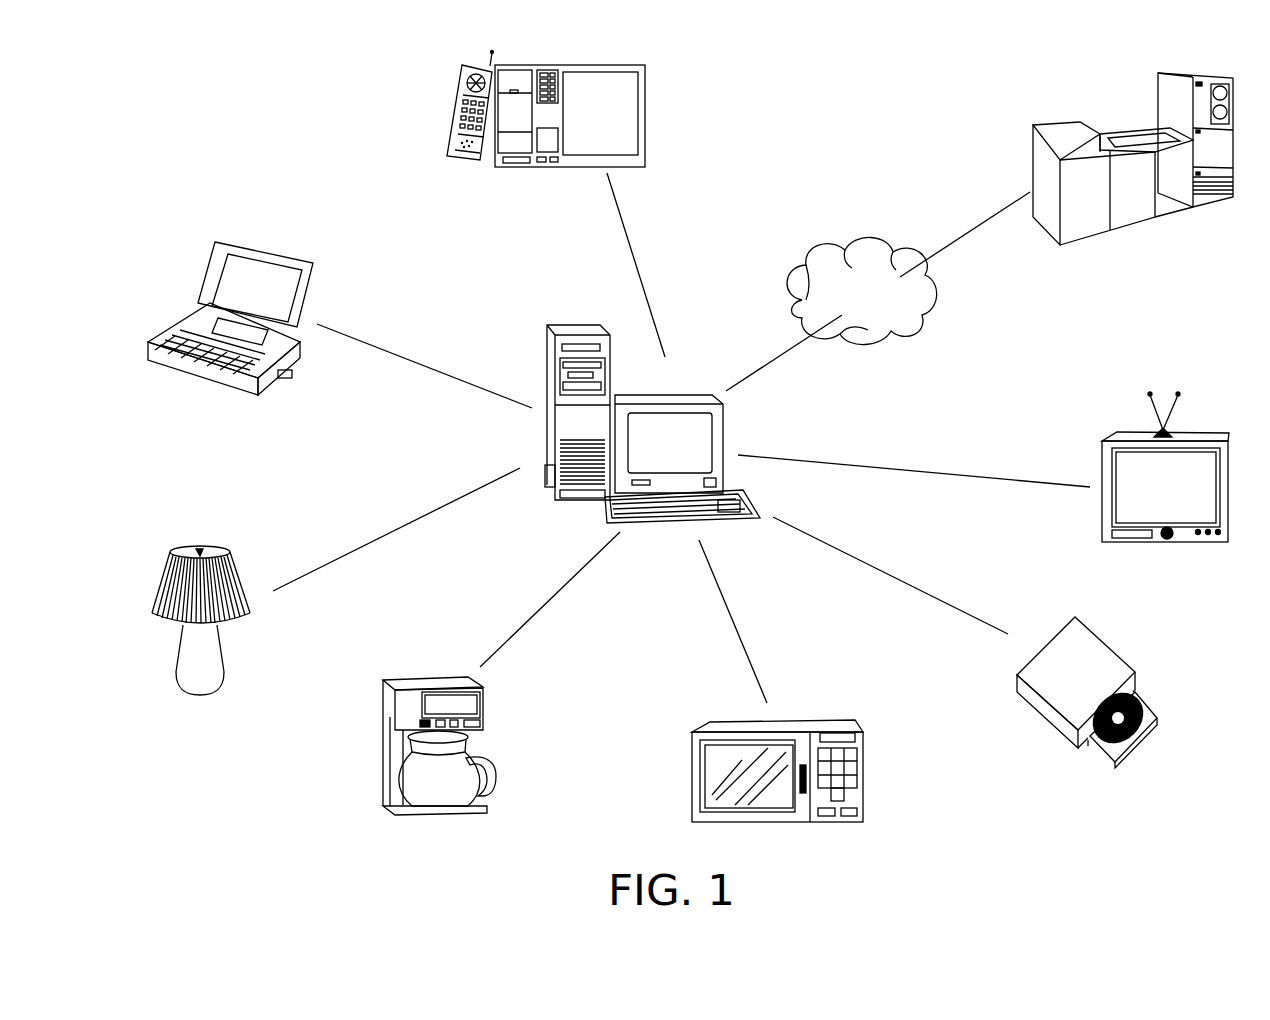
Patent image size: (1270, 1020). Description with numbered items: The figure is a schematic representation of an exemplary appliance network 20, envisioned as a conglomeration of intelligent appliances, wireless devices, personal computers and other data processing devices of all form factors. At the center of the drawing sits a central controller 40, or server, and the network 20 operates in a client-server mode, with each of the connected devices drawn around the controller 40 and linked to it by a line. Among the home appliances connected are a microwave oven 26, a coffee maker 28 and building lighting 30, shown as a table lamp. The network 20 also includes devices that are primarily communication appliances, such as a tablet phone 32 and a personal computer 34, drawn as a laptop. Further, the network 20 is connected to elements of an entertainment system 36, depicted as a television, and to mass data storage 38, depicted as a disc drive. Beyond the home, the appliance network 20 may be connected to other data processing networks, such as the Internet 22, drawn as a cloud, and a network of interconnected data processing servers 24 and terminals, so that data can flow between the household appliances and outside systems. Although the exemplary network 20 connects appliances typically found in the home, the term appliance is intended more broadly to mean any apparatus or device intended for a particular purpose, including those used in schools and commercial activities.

The appliance network 20 is at (840, 125).
The Internet 22 is at (847, 240).
The data processing servers 24 is at (1098, 230).
The microwave oven 26 is at (828, 720).
The coffee maker 28 is at (420, 677).
The building lighting 30 is at (218, 545).
The tablet phone 32 is at (642, 98).
The personal computer 34 is at (243, 245).
The entertainment system 36 is at (1203, 430).
The mass data storage 38 is at (1095, 633).
The central controller 40 is at (552, 330).